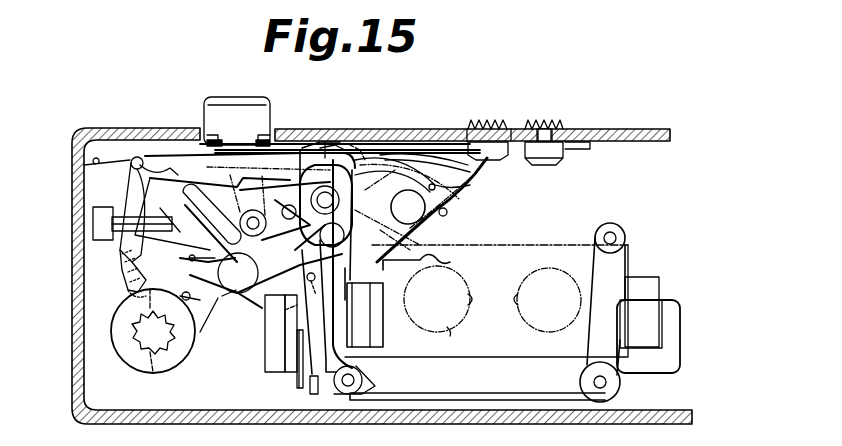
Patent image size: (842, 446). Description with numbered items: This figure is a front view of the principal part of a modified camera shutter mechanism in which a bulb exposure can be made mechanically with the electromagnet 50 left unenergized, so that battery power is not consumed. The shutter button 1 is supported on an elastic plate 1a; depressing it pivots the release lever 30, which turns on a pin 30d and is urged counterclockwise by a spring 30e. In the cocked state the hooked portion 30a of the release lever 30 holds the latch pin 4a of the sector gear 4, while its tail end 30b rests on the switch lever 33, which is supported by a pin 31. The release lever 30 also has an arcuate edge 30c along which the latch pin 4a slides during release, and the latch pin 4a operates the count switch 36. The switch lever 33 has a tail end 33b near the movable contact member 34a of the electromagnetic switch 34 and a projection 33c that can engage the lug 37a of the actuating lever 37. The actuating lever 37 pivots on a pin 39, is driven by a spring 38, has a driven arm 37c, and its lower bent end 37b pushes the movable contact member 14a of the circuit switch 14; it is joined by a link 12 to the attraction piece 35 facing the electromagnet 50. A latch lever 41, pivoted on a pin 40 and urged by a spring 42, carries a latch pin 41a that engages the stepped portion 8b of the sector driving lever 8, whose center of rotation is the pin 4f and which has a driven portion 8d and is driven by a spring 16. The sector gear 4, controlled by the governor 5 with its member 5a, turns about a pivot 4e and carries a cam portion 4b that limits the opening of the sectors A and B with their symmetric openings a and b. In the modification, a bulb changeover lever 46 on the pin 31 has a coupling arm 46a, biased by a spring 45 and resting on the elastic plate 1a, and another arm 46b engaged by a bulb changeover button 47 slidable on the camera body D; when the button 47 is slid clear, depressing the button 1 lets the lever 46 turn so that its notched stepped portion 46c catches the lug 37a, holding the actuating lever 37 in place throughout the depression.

The shutter button 1 is at (248, 107).
The elastic plate 1a is at (288, 142).
The sector gear 4 is at (226, 308).
The latch pin 4a is at (190, 258).
The cam portion 4b is at (286, 327).
The pivot 4e is at (237, 171).
The pin 4f is at (238, 292).
The governor 5 is at (116, 320).
The star wheel 5a is at (153, 355).
The sector driving lever 8 is at (198, 262).
The stepped portion 8b is at (280, 273).
The driven portion 8d is at (130, 210).
The link 12 is at (500, 392).
The circuit switch 14 is at (266, 355).
The movable contact member 14a is at (297, 385).
The spring 16 is at (210, 322).
The release lever 30 is at (130, 188).
The hooked portion 30a is at (124, 254).
The tail end 30b is at (322, 140).
The arcuate edge 30c is at (134, 282).
The pin 30d is at (139, 157).
The spring 30e is at (84, 165).
The pin 31 is at (418, 222).
The switch lever 33 is at (390, 230).
The tail end 33b is at (438, 299).
The projection 33c is at (380, 160).
The electromagnetic switch 34 is at (375, 314).
The movable contact member 34a is at (446, 262).
The attraction piece 35 is at (594, 346).
The count switch 36 is at (93, 222).
The actuating lever 37 is at (330, 380).
The lug 37a is at (362, 142).
The lower bent end 37b is at (312, 396).
The driven arm 37c is at (188, 204).
The spring 38 is at (299, 284).
The pin 39 is at (308, 246).
The pin 40 is at (310, 198).
The latch lever 41 is at (248, 205).
The latch pin 41a is at (212, 214).
The spring 42 is at (286, 220).
The spring 45 is at (447, 212).
The bulb changeover lever 46 is at (432, 210).
The coupling arm 46a is at (332, 142).
The arm 46b is at (490, 162).
The notched stepped portion 46c is at (405, 155).
The bulb changeover button 47 is at (540, 120).
The electromagnet 50 is at (681, 330).
The sector A is at (411, 295).
The sector B is at (527, 245).
The camera body D is at (600, 130).
The opening a is at (451, 338).
The opening b is at (552, 268).